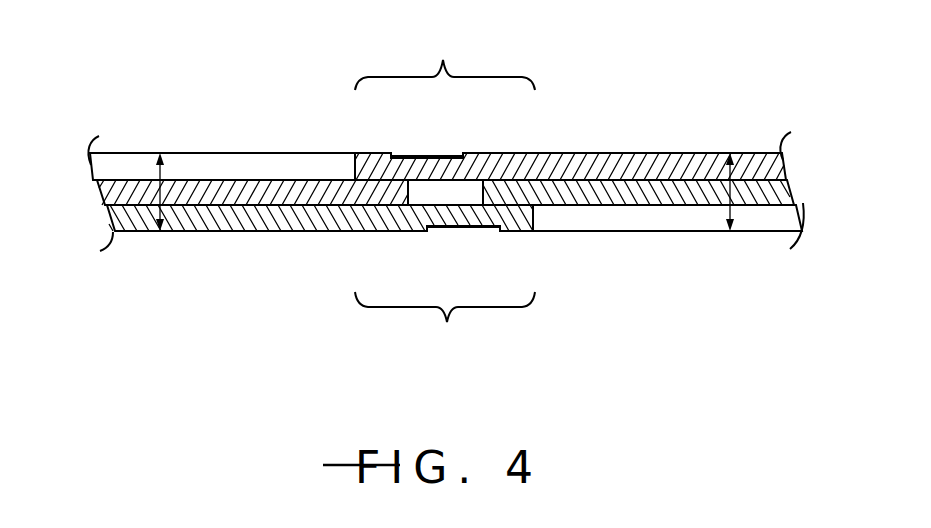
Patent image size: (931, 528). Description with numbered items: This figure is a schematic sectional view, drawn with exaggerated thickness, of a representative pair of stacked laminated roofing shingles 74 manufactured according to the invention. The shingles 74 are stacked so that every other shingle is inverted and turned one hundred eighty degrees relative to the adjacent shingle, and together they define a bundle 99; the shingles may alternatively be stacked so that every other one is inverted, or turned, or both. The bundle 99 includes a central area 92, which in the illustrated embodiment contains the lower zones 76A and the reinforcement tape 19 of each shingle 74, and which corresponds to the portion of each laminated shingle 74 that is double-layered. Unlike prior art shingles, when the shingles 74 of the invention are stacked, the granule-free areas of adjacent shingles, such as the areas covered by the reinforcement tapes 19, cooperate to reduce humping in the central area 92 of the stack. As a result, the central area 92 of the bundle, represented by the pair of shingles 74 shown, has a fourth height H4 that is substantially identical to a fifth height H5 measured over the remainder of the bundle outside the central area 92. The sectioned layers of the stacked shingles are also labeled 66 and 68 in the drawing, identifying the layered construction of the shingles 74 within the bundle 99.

The bundle 99 is at (250, 86).
The central area 92 is at (445, 61).
The reinforcement tape 19 is at (458, 153).
The laminated roofing shingle 74 is at (644, 152).
The intermediate layer 66 is at (96, 193).
The outer substrate layer 68 is at (106, 215).
The fourth height H4 is at (168, 194).
The fifth height H5 is at (722, 194).
The lower zone 76A is at (445, 321).